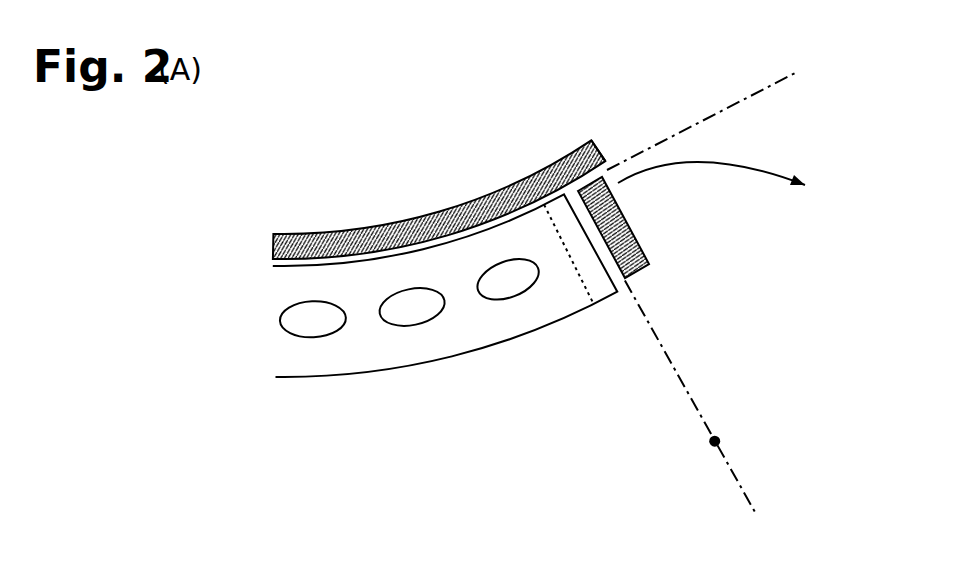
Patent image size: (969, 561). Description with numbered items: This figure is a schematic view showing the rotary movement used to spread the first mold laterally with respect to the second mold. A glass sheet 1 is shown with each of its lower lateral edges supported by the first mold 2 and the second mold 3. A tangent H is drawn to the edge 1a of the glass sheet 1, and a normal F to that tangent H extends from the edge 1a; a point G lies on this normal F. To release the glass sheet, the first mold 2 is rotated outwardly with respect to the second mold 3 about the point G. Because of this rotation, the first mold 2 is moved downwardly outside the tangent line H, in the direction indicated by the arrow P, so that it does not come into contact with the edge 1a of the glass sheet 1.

The glass sheet 1 is at (391, 223).
The edge of the glass sheet 1a is at (589, 146).
The first mold 2 is at (647, 273).
The second mold 3 is at (438, 348).
The tangent H is at (716, 108).
The arrow P is at (711, 159).
The normal F is at (693, 408).
The point G is at (726, 424).